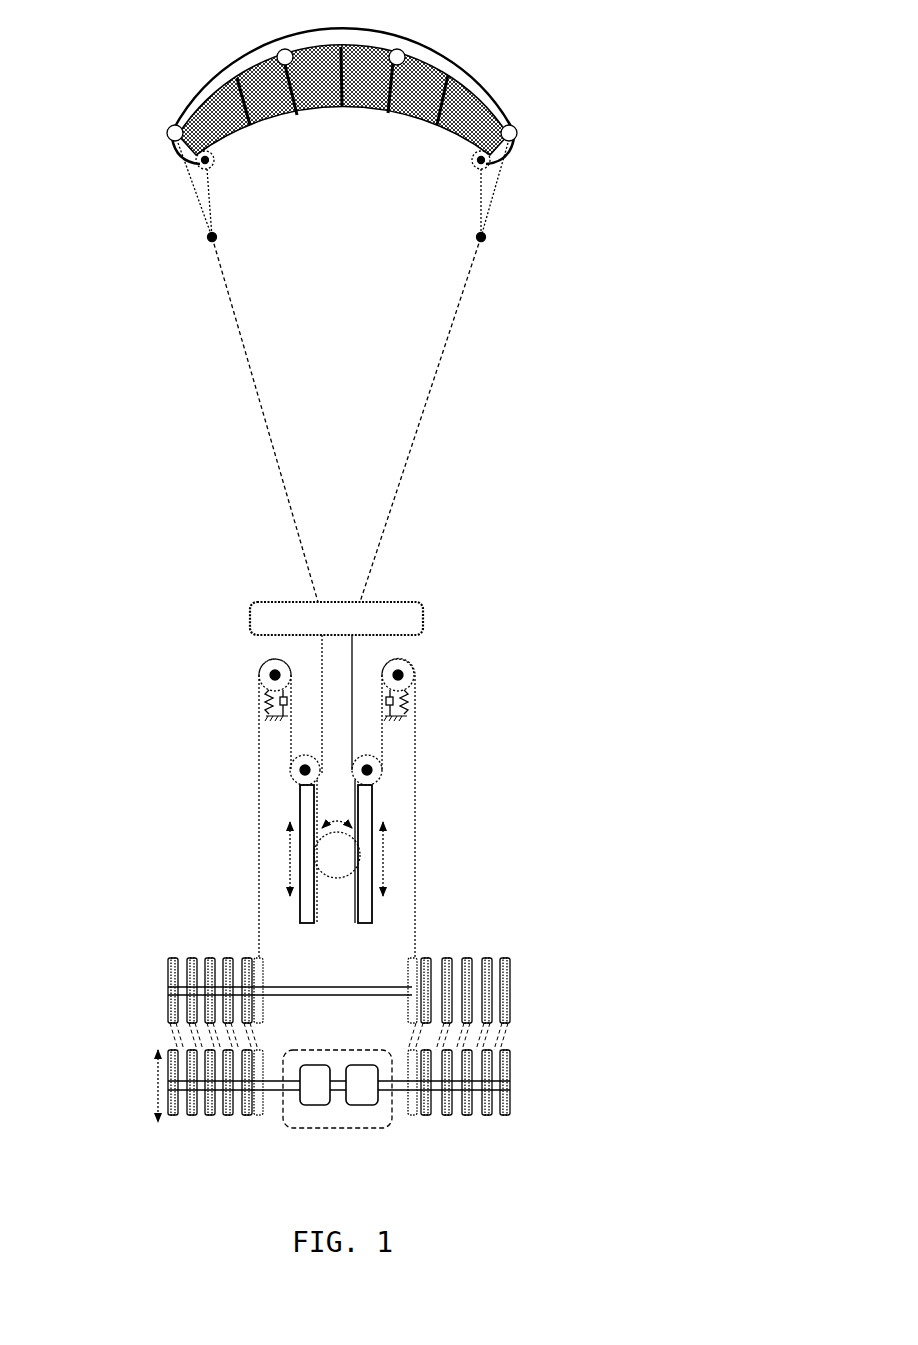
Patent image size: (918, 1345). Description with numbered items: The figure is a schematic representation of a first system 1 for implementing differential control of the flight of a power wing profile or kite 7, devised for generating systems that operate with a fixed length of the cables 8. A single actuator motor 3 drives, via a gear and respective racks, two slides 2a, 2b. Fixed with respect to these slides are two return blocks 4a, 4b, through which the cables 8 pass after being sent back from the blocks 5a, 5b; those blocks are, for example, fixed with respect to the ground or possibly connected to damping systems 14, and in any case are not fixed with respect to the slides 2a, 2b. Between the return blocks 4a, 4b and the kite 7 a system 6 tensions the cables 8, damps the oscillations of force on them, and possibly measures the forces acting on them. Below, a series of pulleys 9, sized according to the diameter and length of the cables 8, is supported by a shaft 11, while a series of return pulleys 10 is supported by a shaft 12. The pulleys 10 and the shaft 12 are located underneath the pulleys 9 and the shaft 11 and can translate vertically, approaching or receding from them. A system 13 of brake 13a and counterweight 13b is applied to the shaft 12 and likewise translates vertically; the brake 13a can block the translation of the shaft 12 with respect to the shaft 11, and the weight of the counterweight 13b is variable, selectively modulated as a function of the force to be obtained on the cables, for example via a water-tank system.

The first system 1 is at (617, 906).
The slide 2a is at (300, 913).
The slide 2b is at (372, 913).
The single actuator motor 3 is at (318, 858).
The return block 4a is at (300, 765).
The return block 4b is at (378, 768).
The block 5a is at (266, 668).
The block 5b is at (410, 675).
The tensioning system 6 is at (297, 625).
The kite 7 is at (536, 170).
The cables 8 is at (404, 452).
The pulleys 9 is at (150, 996).
The return pulleys 10 is at (196, 1130).
The shaft 11 is at (305, 985).
The shaft 12 is at (277, 1093).
The brake and counterweight system 13 is at (383, 1094).
The brake 13a is at (322, 1113).
The counterweight 13b is at (372, 1113).
The damping systems 14 is at (262, 698).